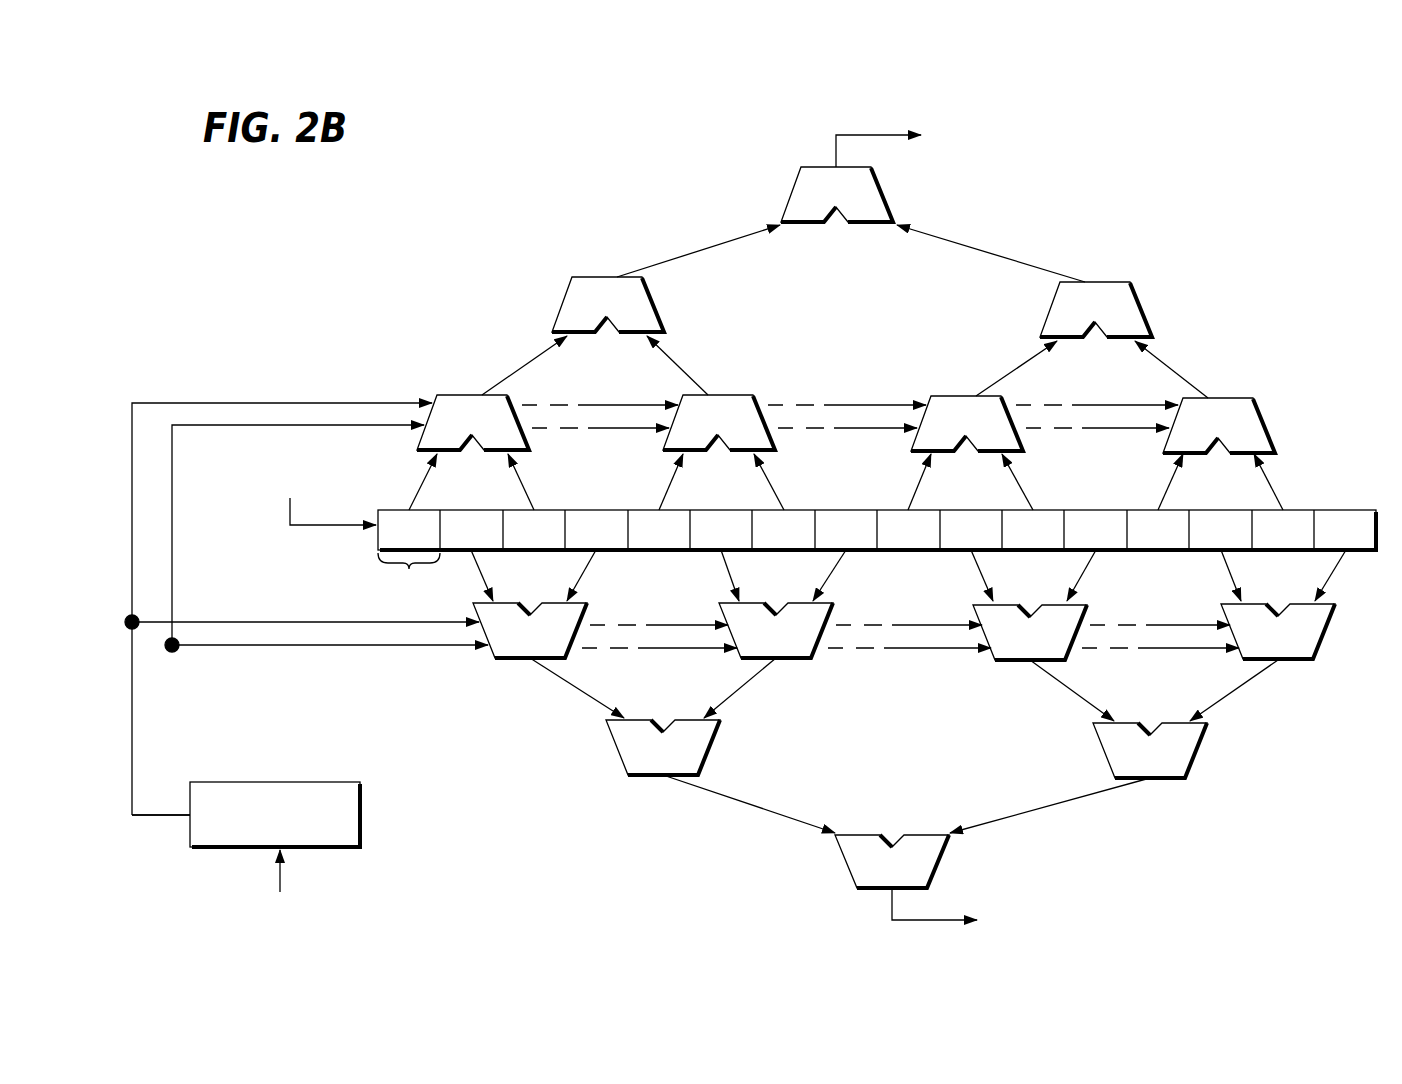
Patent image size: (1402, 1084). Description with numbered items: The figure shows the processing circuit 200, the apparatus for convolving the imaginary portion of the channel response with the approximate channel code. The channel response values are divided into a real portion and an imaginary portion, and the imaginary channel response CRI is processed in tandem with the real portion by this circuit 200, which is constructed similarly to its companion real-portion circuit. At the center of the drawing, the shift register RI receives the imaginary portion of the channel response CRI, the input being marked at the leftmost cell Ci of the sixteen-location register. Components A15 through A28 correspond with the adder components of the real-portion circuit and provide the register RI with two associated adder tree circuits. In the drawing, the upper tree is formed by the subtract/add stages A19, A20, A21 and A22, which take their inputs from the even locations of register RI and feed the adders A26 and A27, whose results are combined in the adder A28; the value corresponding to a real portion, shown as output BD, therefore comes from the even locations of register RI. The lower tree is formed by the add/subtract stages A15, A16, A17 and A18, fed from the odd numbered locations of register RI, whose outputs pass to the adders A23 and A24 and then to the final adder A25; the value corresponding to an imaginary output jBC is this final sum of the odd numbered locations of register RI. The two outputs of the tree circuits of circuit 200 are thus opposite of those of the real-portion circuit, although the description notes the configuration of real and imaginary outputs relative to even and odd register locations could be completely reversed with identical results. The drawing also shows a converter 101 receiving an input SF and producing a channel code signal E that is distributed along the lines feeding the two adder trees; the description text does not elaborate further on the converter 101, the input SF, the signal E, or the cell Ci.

The processing circuit 200 is at (306, 249).
The converter 101 is at (362, 818).
The adder component A15 is at (511, 659).
The adder component A16 is at (810, 659).
The adder component A17 is at (992, 661).
The adder component A18 is at (1320, 660).
The adder component A19 is at (462, 394).
The adder component A20 is at (746, 394).
The adder component A21 is at (944, 395).
The adder component A22 is at (1250, 397).
The adder component A23 is at (616, 776).
The adder component A24 is at (1195, 765).
The adder component A25 is at (848, 862).
The adder component A26 is at (592, 276).
The adder component A27 is at (1115, 281).
The adder component A28 is at (796, 193).
The shift register RI is at (1357, 511).
The imaginary portion of the channel response CRI is at (300, 525).
The register cell Ci is at (409, 578).
The real portion output BD is at (836, 133).
The imaginary output jBC is at (888, 905).
The converter output / channel code E is at (148, 815).
The spreading factor input SF is at (279, 885).